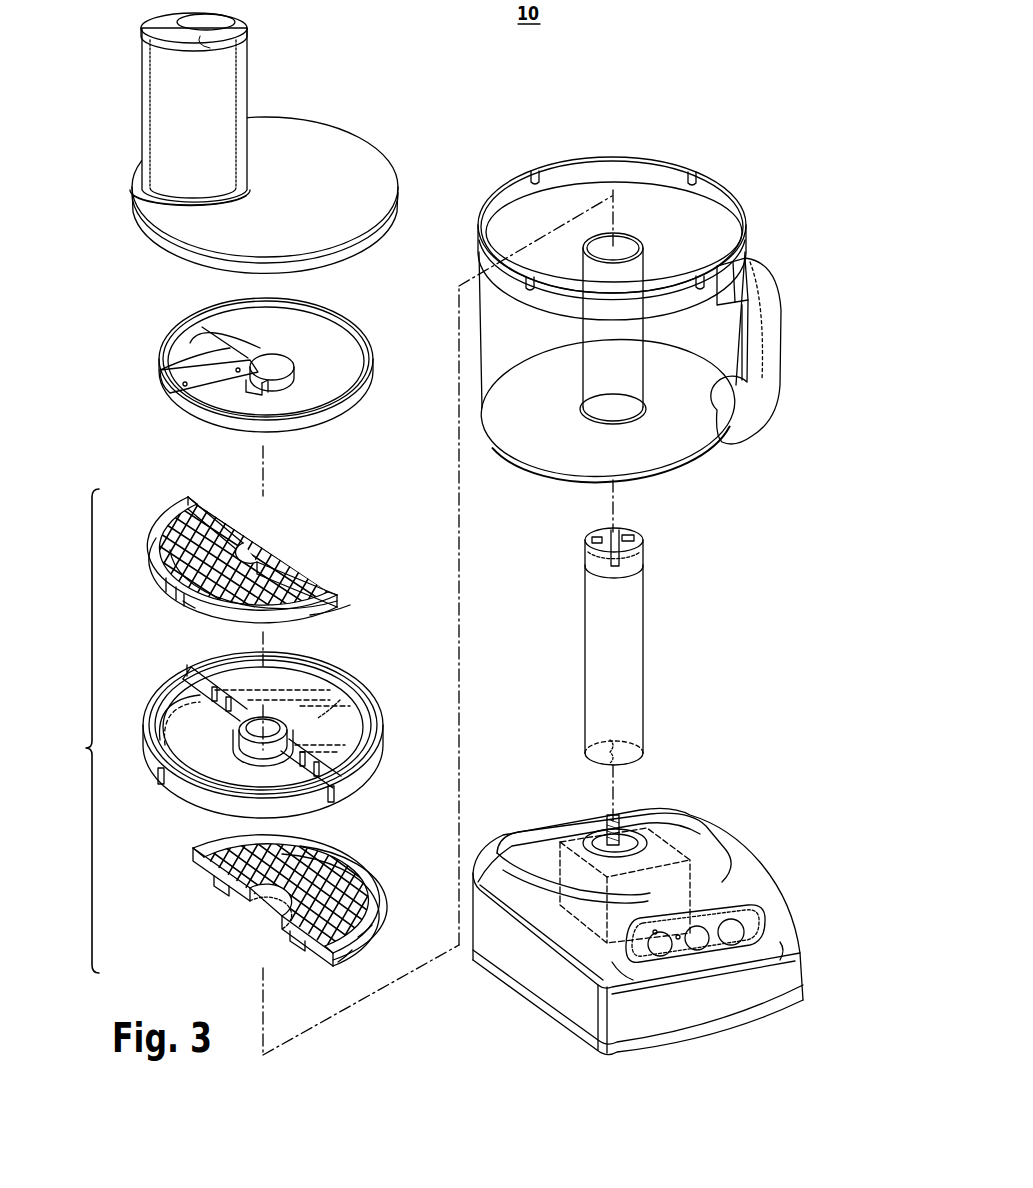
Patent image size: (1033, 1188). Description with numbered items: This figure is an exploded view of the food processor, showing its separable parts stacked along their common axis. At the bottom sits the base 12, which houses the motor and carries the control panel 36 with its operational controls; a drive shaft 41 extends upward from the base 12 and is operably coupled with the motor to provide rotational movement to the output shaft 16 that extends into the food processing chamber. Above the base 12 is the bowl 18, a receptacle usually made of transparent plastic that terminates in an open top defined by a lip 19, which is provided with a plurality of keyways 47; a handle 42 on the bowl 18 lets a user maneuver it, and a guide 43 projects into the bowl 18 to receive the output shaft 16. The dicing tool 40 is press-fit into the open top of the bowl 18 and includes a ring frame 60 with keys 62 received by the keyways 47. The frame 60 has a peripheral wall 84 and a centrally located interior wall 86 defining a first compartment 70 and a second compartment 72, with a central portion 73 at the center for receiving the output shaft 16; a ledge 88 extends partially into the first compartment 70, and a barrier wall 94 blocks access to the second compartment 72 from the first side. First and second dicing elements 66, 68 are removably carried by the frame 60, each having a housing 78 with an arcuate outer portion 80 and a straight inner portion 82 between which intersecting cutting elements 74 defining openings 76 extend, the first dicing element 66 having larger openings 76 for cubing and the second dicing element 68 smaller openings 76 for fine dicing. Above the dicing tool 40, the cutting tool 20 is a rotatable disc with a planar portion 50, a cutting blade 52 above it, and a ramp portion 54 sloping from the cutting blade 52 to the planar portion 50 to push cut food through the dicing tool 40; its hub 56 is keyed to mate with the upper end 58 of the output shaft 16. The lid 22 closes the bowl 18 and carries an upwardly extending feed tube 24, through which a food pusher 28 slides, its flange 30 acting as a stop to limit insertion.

The base 12 is at (744, 836).
The output shaft 16 is at (627, 670).
The bowl 18 is at (697, 450).
The lip 19 is at (746, 248).
The cutting tool 20 is at (158, 342).
The lid 22 is at (128, 172).
The feed tube 24 is at (141, 80).
The food pusher 28 is at (226, 81).
The flange 30 is at (143, 33).
The control panel 36 is at (735, 932).
The dicing tool 40 is at (78, 731).
The drive shaft 41 is at (605, 826).
The handle 42 is at (768, 298).
The guide 43 is at (632, 272).
The keyways 47 is at (545, 170).
The planar portion 50 is at (318, 341).
The cutting blade 52 is at (200, 380).
The ramp portion 54 is at (190, 343).
The hub 56 is at (255, 390).
The upper end of the output shaft 58 is at (638, 547).
The frame 60 is at (171, 808).
The keys 62 is at (163, 770).
The first dicing element 66 is at (168, 518).
The second dicing element 68 is at (372, 891).
The first compartment 70 is at (208, 754).
The second compartment 72 is at (370, 693).
The central portion 73 is at (272, 708).
The cutting elements 74 is at (229, 540).
The openings 76 is at (262, 560).
The housing 78 is at (332, 611).
The outer portion 80 is at (192, 609).
The inner portion 82 is at (277, 565).
The peripheral wall 84 is at (350, 784).
The interior wall 86 is at (197, 704).
The ledge 88 is at (167, 720).
The barrier wall 94 is at (315, 692).